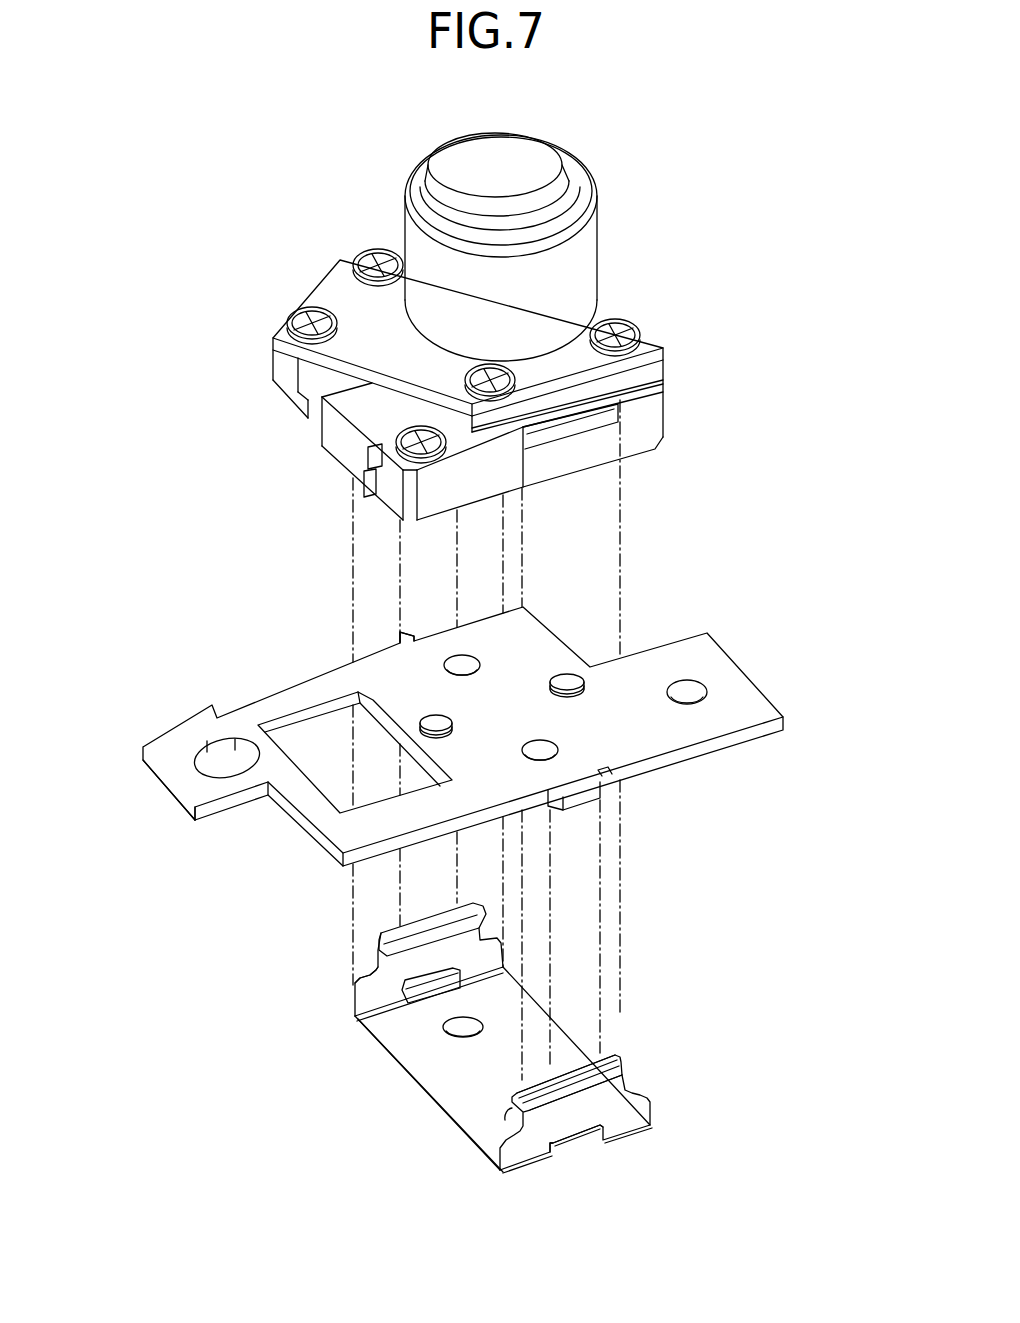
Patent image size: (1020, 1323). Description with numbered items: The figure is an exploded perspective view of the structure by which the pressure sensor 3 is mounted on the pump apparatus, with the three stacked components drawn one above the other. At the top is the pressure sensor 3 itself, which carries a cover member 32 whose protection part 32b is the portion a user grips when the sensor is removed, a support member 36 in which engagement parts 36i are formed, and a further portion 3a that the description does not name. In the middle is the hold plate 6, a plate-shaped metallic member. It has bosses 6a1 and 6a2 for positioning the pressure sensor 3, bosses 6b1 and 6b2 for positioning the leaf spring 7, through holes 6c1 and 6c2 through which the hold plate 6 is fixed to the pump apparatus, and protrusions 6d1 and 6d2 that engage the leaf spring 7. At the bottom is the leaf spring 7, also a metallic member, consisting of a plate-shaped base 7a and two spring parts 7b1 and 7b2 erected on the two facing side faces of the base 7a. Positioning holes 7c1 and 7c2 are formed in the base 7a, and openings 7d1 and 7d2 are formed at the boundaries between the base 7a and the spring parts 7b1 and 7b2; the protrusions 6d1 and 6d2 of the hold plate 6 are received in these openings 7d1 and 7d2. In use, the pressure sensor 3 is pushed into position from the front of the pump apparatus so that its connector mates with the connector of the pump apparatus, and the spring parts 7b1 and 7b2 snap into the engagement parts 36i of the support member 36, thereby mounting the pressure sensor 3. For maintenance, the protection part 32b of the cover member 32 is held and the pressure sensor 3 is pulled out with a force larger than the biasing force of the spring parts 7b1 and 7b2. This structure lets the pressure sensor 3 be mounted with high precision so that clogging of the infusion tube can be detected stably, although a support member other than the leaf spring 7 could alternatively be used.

The pressure sensor 3 is at (258, 226).
The lens 3a is at (518, 167).
The cover member 32 is at (603, 236).
The protection part 32b is at (585, 262).
The support member 36 is at (665, 396).
The engagement parts 36i is at (588, 428).
The hold plate 6 is at (763, 682).
The boss 6a1 is at (430, 724).
The boss 6a2 is at (570, 672).
The boss 6b1 is at (457, 652).
The boss 6b2 is at (562, 749).
The through hole 6c1 is at (205, 771).
The through hole 6c2 is at (687, 684).
The protrusion 6d1 is at (396, 632).
The protrusion 6d2 is at (582, 808).
The leaf spring 7 is at (652, 1112).
The base 7a is at (484, 1092).
The spring part 7b1 is at (403, 912).
The spring part 7b2 is at (596, 1064).
The positioning hole 7c1 is at (460, 1030).
The positioning hole 7c2 is at (505, 1108).
The opening 7d1 is at (355, 1022).
The opening 7d2 is at (588, 1140).